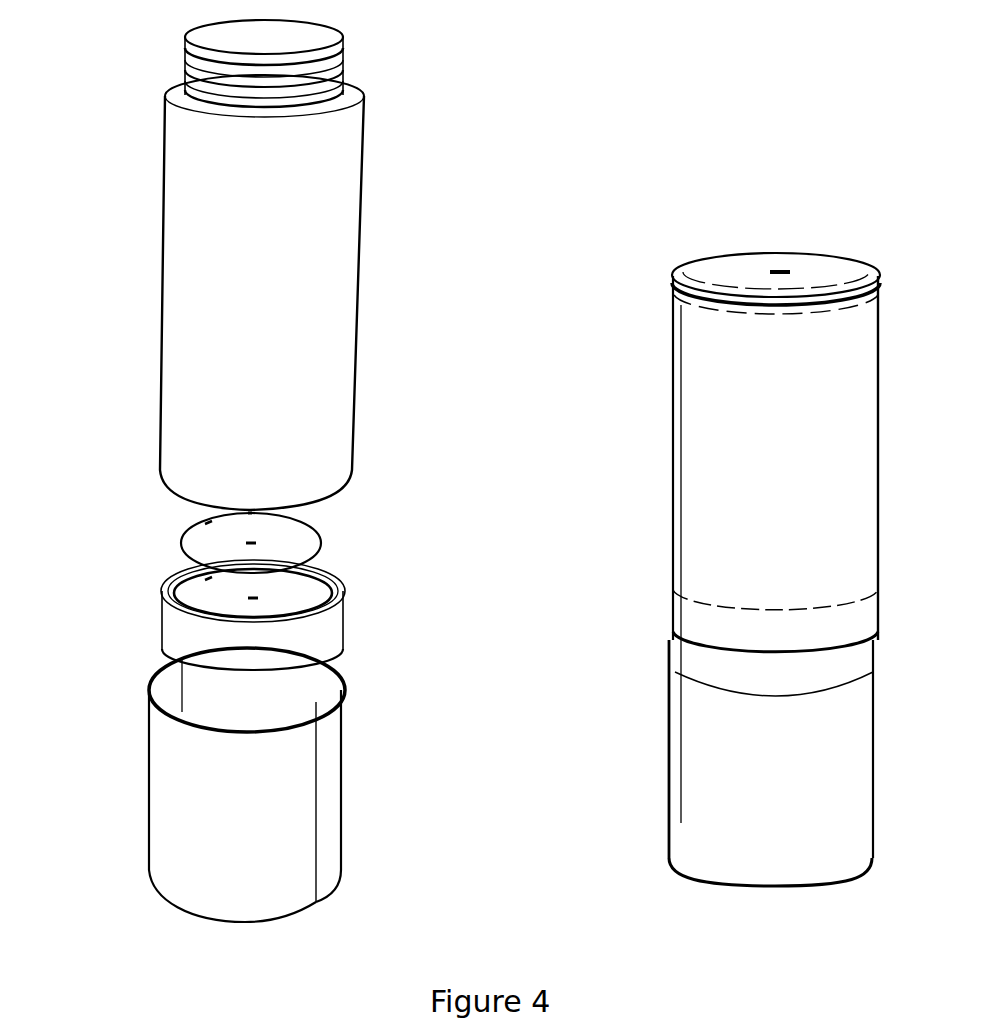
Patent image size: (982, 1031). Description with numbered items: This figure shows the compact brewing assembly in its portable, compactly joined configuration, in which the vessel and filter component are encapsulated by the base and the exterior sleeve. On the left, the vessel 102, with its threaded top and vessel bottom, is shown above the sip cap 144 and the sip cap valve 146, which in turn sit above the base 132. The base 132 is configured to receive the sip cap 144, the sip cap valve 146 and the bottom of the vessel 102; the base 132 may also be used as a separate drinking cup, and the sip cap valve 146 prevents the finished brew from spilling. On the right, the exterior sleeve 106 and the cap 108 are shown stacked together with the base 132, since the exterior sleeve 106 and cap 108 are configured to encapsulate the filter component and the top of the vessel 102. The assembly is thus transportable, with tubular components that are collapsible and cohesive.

The vessel 102 is at (178, 320).
The exterior sleeve 106 is at (702, 434).
The cap 108 is at (733, 273).
The base 132 is at (327, 825).
The sip cap 144 is at (340, 574).
The sip cap valve 146 is at (318, 542).